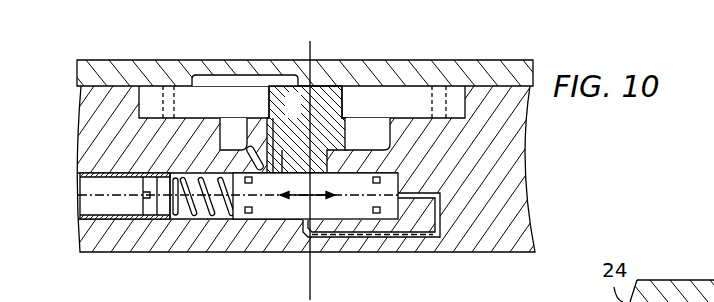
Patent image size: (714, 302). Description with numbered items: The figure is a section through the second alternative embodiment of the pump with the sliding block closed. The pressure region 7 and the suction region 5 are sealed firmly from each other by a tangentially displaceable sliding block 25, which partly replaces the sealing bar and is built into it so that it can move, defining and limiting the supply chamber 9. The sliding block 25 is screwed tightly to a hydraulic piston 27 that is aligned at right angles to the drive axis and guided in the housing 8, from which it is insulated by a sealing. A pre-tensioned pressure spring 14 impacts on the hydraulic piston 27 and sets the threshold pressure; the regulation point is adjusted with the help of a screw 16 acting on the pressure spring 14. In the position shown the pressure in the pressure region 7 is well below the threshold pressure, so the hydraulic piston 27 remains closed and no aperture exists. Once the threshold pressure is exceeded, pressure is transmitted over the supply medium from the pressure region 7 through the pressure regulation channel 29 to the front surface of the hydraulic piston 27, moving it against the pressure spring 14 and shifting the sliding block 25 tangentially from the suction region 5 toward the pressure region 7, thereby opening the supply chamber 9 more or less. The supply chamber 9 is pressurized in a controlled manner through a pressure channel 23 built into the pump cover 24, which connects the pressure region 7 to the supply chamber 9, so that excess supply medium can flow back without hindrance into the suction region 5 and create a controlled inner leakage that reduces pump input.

The suction region 5 is at (372, 145).
The pressure region 7 is at (239, 140).
The housing 8 is at (503, 163).
The supply chamber 9 is at (297, 115).
The pressure spring 14 is at (208, 215).
The screw 16 is at (157, 217).
The pressure channel 23 is at (235, 78).
The pump cover 24 is at (500, 77).
The sliding block 25 is at (323, 125).
The hydraulic piston 27 is at (283, 207).
The pressure regulation channel 29 is at (258, 150).